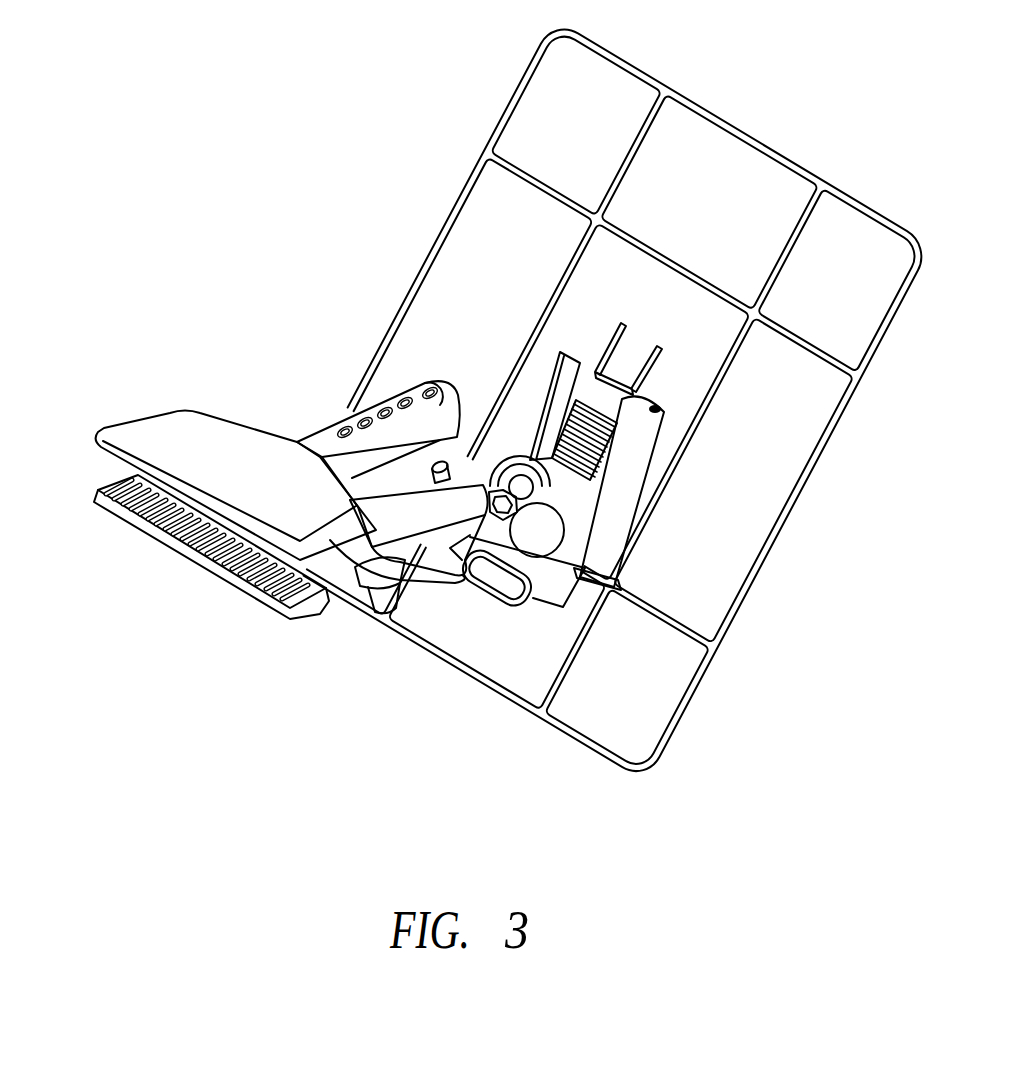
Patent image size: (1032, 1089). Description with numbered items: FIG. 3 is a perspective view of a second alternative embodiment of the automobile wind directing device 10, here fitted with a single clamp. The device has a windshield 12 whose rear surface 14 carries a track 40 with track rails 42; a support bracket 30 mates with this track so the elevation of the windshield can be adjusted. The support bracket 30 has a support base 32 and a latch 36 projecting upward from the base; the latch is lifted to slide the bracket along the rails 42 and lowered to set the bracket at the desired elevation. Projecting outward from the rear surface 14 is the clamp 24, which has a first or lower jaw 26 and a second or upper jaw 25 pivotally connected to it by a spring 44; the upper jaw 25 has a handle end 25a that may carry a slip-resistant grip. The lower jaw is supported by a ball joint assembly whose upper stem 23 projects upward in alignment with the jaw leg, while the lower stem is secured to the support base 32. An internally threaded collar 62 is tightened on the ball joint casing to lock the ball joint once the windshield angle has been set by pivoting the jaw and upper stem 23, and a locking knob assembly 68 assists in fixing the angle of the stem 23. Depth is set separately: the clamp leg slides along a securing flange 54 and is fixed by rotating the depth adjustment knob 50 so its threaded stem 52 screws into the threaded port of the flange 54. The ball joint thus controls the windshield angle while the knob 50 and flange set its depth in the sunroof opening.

The automobile wind directing device 10 is at (710, 67).
The windshield 12 is at (520, 96).
The rear surface 14 is at (709, 202).
The upper stem 23 is at (490, 470).
The clamp 24 is at (88, 420).
The upper jaw 25 is at (203, 396).
The handle end 25a is at (402, 388).
The lower jaw 26 is at (290, 608).
The support bracket 30 is at (456, 620).
The support base 32 is at (517, 590).
The latch 36 is at (496, 602).
The track 40 is at (660, 388).
The track rails 42 is at (596, 448).
The spring 44 is at (643, 440).
The depth adjustment knob 50 is at (384, 578).
The threaded stem 52 is at (440, 480).
The securing flange 54 is at (470, 405).
The internally threaded collar 62 is at (566, 510).
The locking knob assembly 68 is at (627, 680).